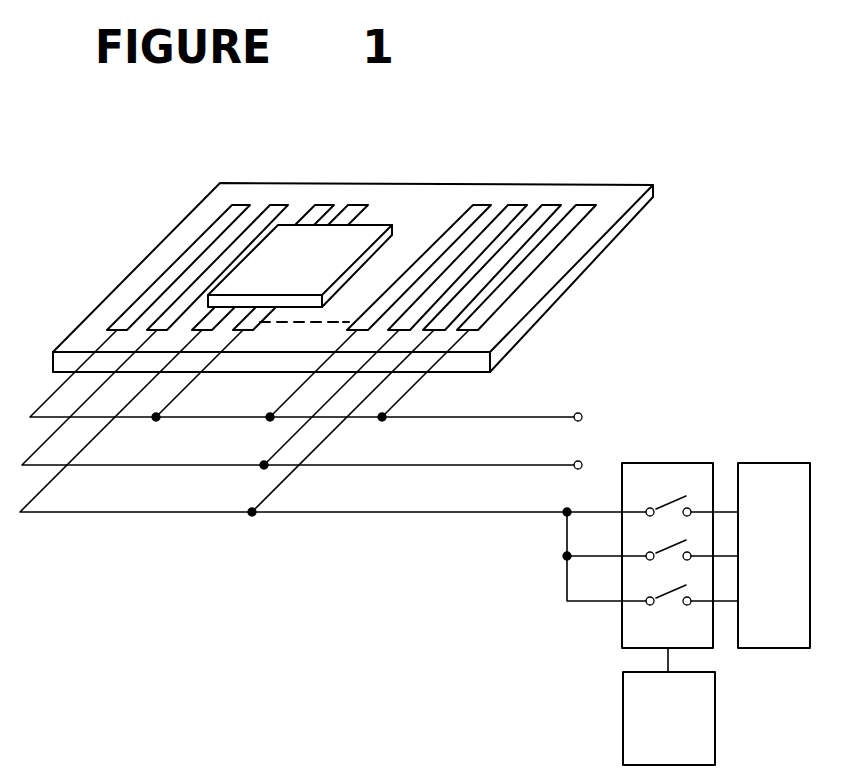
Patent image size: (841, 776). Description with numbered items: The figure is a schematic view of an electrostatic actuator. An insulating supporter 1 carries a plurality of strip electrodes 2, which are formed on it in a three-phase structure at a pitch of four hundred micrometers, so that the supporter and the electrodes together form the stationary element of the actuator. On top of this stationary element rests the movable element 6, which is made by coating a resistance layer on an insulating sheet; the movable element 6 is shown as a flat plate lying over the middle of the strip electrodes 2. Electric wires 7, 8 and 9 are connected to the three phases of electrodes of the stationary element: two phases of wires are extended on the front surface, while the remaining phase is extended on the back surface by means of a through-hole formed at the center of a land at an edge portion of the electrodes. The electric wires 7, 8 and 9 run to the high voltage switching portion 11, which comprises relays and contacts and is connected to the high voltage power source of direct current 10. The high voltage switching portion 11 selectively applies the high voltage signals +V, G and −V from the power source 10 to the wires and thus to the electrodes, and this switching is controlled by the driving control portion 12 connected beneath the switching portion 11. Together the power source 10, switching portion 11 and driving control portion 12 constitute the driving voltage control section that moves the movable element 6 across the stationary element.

The insulating supporter 1 is at (622, 232).
The strip electrodes 2 is at (242, 203).
The movable element 6 is at (386, 224).
The electric wire 7 is at (520, 417).
The electric wire 8 is at (520, 465).
The electric wire 9 is at (473, 514).
The high voltage power source of direct current 10 is at (767, 473).
The high voltage switching portion 11 is at (668, 473).
The driving control portion 12 is at (697, 722).